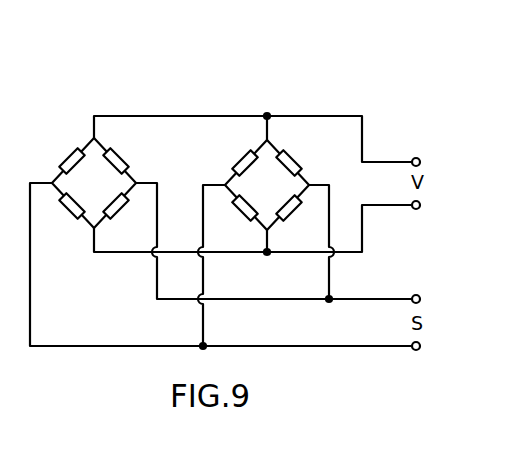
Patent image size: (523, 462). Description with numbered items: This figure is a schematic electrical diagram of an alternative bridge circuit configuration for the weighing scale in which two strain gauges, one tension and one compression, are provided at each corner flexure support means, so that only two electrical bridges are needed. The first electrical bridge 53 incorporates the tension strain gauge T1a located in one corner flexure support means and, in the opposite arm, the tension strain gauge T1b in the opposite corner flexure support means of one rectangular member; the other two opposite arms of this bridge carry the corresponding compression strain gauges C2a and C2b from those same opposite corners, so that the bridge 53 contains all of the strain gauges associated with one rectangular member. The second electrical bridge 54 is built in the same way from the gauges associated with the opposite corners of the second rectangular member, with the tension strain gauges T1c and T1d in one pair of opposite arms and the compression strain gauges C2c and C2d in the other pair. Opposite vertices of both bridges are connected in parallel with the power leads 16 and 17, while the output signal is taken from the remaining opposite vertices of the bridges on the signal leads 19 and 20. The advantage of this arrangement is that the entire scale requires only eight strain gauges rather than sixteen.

The power lead 16 is at (389, 162).
The power lead 17 is at (392, 205).
The signal lead 19 is at (370, 299).
The signal lead 20 is at (347, 346).
The first electrical bridge 53 is at (96, 186).
The second electrical bridge 54 is at (267, 188).
The tension strain gauge T1a is at (64, 153).
The tension strain gauge T1b is at (126, 217).
The tension strain gauge T1c is at (236, 155).
The tension strain gauge T1d is at (256, 195).
The compression strain gauge C2a is at (63, 217).
The compression strain gauge C2b is at (127, 153).
The compression strain gauge C2c is at (235, 218).
The compression strain gauge C2d is at (298, 155).